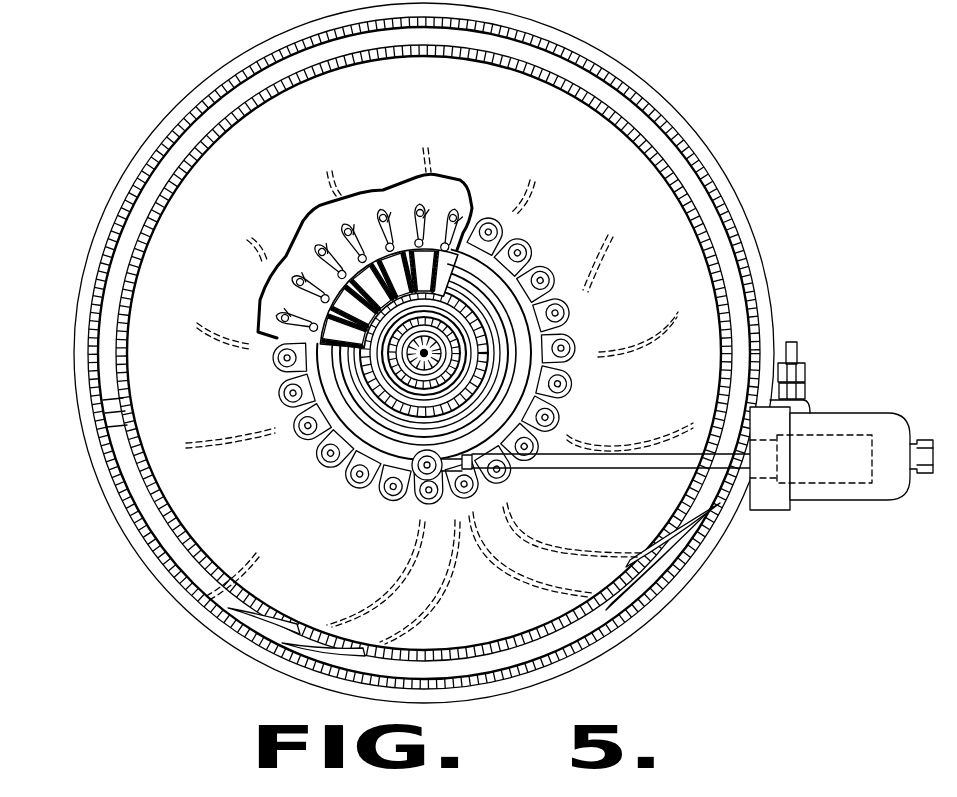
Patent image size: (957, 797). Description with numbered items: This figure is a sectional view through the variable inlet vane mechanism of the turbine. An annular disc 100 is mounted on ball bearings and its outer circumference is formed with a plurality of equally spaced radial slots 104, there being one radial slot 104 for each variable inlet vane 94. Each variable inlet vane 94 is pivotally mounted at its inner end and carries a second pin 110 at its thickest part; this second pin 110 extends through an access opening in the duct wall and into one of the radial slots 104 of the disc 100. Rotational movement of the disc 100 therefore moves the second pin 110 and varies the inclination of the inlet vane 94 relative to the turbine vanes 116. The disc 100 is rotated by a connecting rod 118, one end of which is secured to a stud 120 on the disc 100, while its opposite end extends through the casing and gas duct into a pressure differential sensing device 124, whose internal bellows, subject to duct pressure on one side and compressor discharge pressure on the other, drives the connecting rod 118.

The variable inlet vane 94 is at (380, 208).
The annular disc 100 is at (307, 443).
The radial slot 104 is at (283, 397).
The second pin 110 is at (278, 287).
The turbine vane 116 is at (280, 345).
The connecting rod 118 is at (512, 465).
The stud 120 is at (418, 474).
The pressure differential sensing device 124 is at (884, 410).